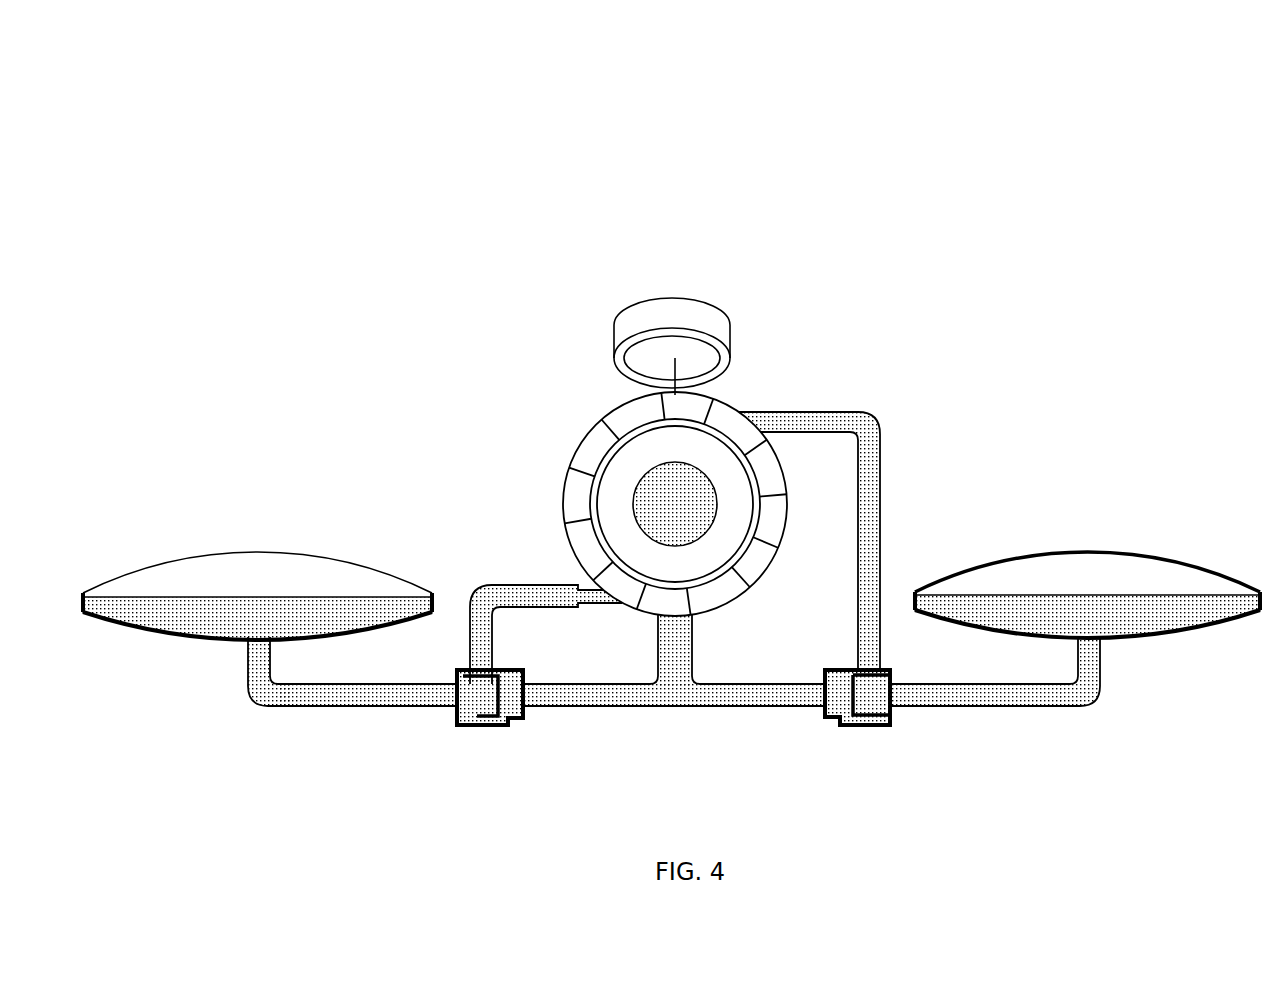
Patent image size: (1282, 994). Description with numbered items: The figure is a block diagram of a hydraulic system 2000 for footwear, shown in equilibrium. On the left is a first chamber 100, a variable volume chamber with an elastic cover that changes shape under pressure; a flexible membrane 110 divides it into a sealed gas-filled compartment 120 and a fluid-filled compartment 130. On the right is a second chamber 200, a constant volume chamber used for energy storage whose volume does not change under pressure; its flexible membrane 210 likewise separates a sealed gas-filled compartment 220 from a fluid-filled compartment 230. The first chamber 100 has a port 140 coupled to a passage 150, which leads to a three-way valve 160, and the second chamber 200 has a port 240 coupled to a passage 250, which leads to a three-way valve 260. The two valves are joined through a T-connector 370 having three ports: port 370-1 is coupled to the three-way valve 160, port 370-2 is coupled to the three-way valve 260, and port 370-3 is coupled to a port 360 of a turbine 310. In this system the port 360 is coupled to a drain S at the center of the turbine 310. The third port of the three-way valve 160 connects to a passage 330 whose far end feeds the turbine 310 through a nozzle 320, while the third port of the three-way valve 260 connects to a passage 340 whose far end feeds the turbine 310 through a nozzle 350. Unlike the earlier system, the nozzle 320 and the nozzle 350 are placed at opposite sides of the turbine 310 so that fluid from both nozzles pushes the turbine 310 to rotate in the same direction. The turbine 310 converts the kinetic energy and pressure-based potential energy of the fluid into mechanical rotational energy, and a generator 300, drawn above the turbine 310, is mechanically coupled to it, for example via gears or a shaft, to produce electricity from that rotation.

The hydraulic system 2000 is at (741, 138).
The first chamber 100 is at (257, 588).
The flexible membrane 110 is at (305, 593).
The compartment 120 is at (193, 562).
The compartment 130 is at (180, 617).
The port 140 is at (250, 645).
The passage 150 is at (362, 707).
The 3-way valve 160 is at (482, 728).
The second chamber 200 is at (1092, 605).
The flexible membrane 210 is at (1118, 600).
The compartment 220 is at (1000, 567).
The compartment 230 is at (1150, 627).
The port 240 is at (1088, 643).
The passage 250 is at (1015, 710).
The 3-way valve 260 is at (873, 727).
The generator 300 is at (728, 340).
The turbine 310 is at (558, 482).
The nozzle 320 is at (580, 590).
The passage 330 is at (465, 657).
The passage 340 is at (903, 655).
The nozzle 350 is at (765, 415).
The port 360 is at (697, 628).
The T-connector 370 is at (674, 736).
The port 370-1 is at (602, 707).
The port 370-2 is at (725, 710).
The port 370-3 is at (650, 658).